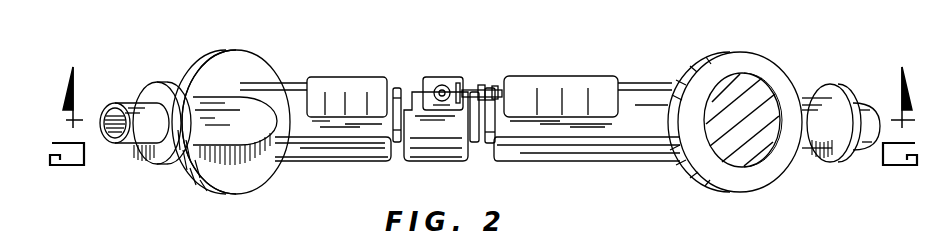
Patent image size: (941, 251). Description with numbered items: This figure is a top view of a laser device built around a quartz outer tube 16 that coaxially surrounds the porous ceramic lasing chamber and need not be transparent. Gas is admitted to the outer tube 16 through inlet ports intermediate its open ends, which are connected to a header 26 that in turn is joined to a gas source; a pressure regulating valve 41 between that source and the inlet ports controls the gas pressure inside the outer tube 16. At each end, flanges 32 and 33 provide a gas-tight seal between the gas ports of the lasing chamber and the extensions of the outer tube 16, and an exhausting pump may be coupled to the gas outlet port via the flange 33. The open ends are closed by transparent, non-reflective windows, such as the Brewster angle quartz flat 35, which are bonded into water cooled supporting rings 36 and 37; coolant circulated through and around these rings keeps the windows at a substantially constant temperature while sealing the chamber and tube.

The outer tube 16 is at (582, 153).
The header 26 is at (520, 87).
The flange 32 is at (146, 92).
The flange 33 is at (857, 148).
The window 35 is at (757, 152).
The water cooled supporting ring 36 is at (256, 65).
The water cooled supporting ring 37 is at (770, 70).
The pressure regulating valve 41 is at (447, 82).